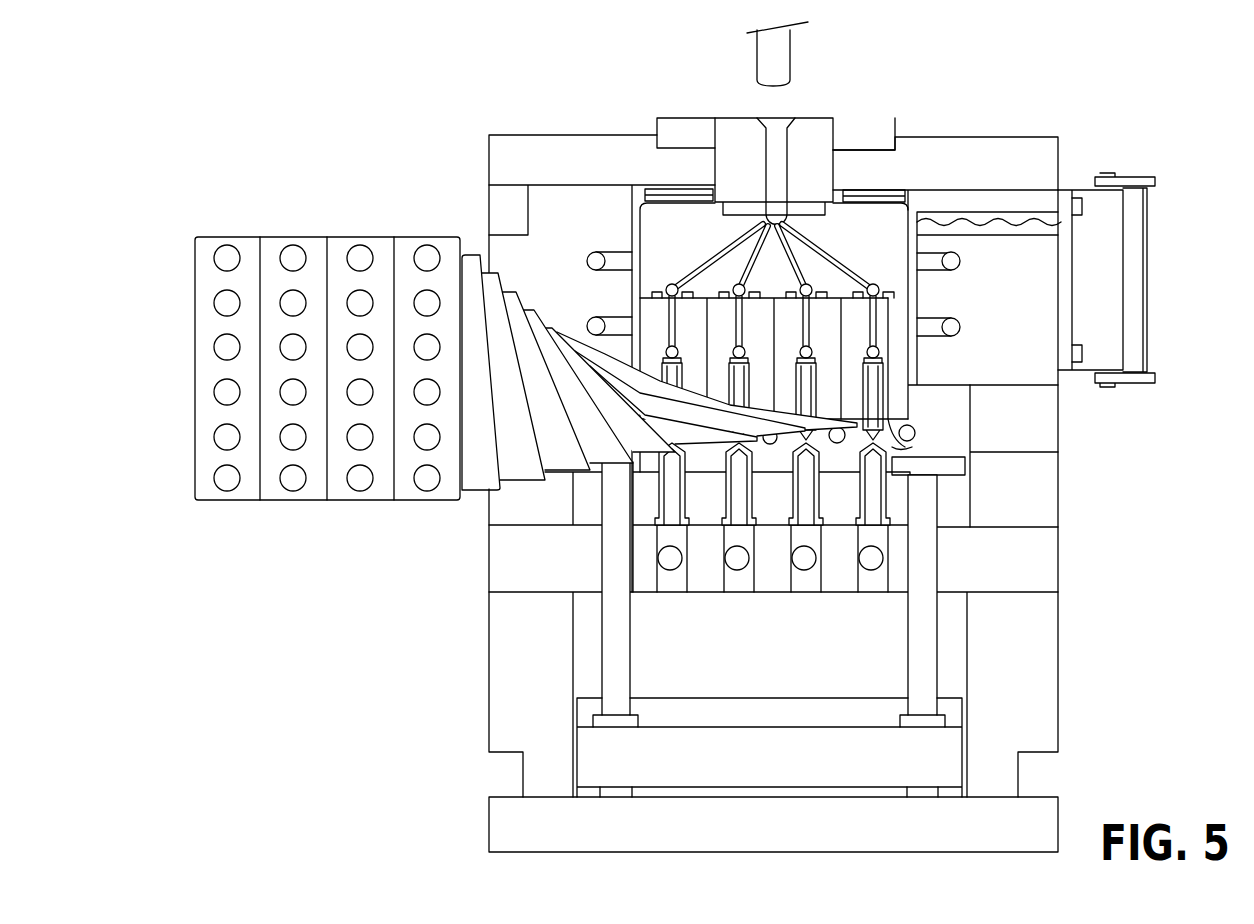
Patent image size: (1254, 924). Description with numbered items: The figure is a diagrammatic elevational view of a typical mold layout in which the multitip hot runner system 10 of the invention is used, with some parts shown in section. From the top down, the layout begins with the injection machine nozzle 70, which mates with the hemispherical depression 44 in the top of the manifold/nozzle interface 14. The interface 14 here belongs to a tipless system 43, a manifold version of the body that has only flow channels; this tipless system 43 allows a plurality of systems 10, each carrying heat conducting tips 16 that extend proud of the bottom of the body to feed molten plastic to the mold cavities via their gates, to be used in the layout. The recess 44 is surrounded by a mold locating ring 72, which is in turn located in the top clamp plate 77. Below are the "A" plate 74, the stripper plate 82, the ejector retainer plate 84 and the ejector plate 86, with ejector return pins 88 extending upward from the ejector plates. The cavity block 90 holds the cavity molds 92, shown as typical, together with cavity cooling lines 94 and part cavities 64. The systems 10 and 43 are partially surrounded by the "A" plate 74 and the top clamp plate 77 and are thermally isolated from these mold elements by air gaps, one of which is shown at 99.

The hot runner system 10 is at (312, 232).
The manifold/nozzle interface 14 is at (818, 116).
The heat conducting tips 16 is at (887, 387).
The tipless system 43 is at (868, 225).
The hemispherical depression 44 is at (774, 118).
The part cavities 64 is at (908, 447).
The injection machine nozzle 70 is at (783, 52).
The mold locating ring 72 is at (868, 130).
The "A" plate 74 is at (1048, 365).
The top clamp plate 77 is at (1005, 150).
The stripper plate 82 is at (1048, 560).
The ejector retainer plate 84 is at (826, 710).
The ejector plate 86 is at (928, 838).
The ejector return pins 88 is at (622, 652).
The cavity block 90 is at (966, 416).
The cavity molds 92 is at (632, 298).
The cavity cooling lines 94 is at (912, 428).
The air gap 99 is at (712, 190).